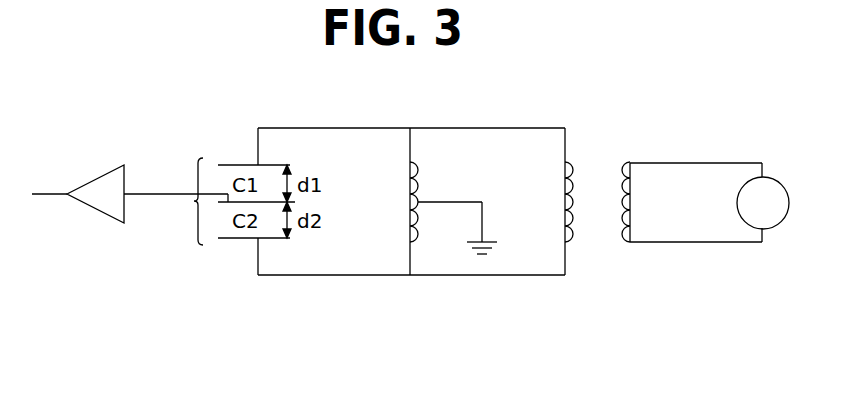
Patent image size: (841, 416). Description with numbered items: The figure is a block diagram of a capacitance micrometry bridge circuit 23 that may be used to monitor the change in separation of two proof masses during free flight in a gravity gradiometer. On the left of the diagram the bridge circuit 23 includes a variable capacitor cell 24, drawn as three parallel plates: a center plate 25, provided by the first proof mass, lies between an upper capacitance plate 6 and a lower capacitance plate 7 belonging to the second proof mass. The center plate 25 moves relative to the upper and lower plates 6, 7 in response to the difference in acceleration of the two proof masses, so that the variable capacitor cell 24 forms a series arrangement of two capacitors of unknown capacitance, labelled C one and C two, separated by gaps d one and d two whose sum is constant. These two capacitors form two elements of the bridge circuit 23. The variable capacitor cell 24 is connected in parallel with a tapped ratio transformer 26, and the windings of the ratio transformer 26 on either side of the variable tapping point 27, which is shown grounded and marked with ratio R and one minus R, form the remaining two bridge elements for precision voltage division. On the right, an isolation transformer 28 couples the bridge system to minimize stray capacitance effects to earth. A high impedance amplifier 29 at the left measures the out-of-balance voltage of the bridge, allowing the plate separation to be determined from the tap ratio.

The upper capacitance plate 6 is at (298, 167).
The lower capacitance plate 7 is at (307, 242).
The bridge circuit 23 is at (577, 112).
The variable capacitor cell 24 is at (194, 201).
The center plate 25 is at (297, 201).
The tapped ratio transformer 26 is at (405, 297).
The variable tapping point 27 is at (467, 201).
The isolation transformer 28 is at (598, 262).
The high impedance amplifier 29 is at (84, 162).